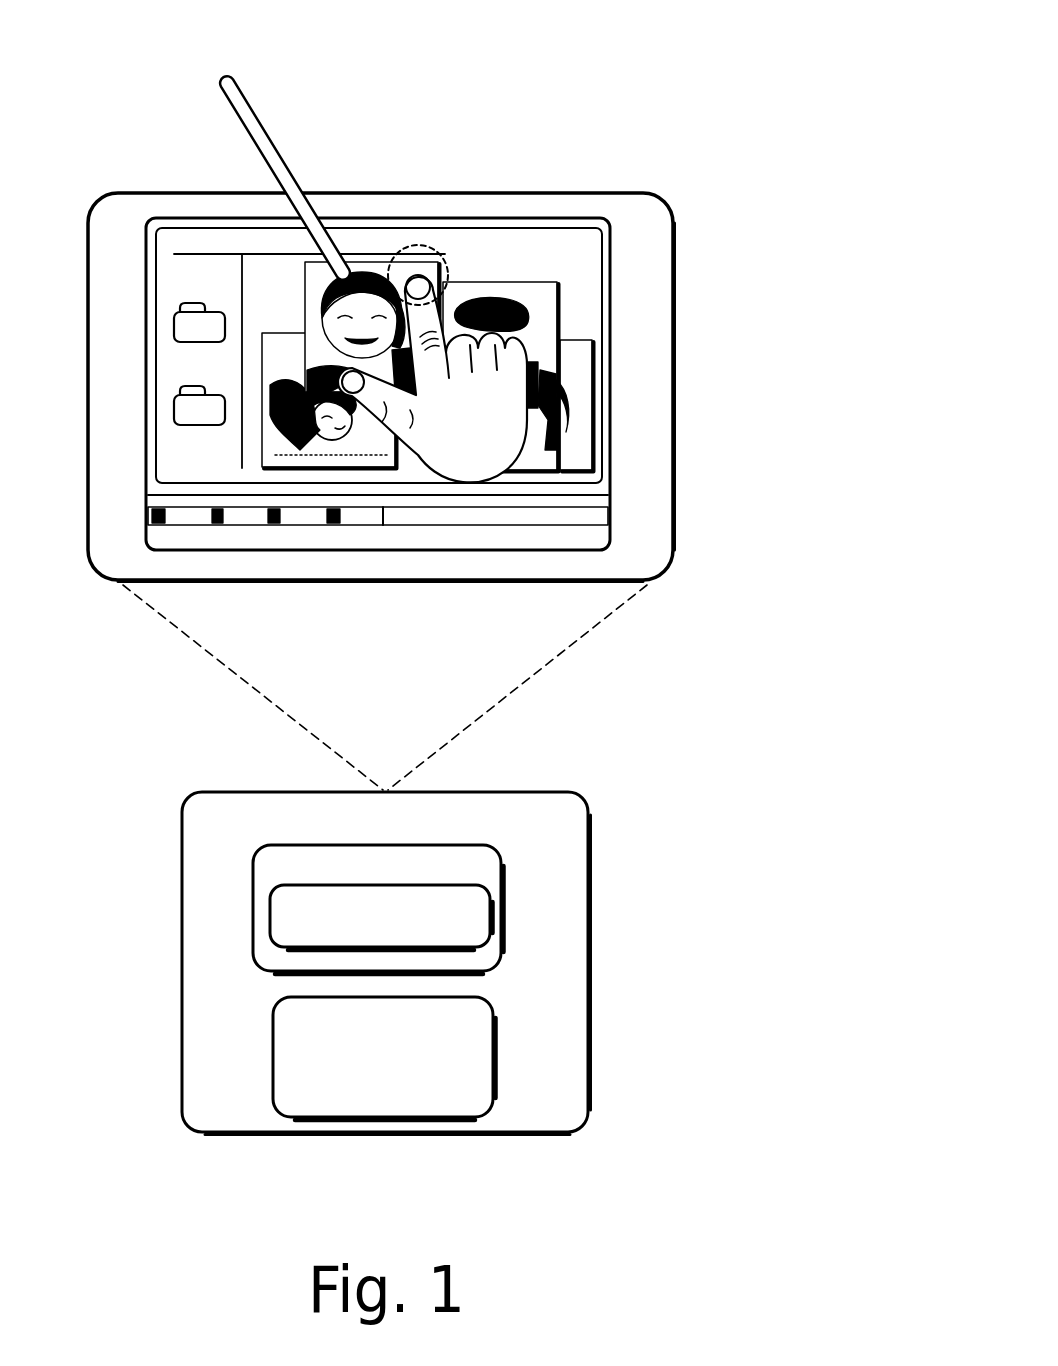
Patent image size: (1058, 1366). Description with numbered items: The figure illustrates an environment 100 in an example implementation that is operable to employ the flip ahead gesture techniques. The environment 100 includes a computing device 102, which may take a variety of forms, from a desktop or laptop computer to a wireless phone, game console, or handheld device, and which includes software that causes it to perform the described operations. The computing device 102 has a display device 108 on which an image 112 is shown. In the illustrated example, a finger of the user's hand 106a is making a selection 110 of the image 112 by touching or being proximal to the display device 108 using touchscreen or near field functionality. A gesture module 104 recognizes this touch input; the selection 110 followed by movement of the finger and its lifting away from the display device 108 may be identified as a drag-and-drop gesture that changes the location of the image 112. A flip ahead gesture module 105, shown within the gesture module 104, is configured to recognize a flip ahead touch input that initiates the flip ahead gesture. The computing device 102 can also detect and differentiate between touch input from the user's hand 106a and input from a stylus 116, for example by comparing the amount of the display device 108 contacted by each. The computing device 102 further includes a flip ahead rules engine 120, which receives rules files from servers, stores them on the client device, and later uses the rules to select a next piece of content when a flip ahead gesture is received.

The environment 100 is at (670, 62).
The computing device 102 is at (498, 824).
The gesture module 104 is at (478, 878).
The flip ahead gesture module 105 is at (397, 938).
The user's hand 106a is at (492, 464).
The display device 108 is at (585, 256).
The selection 110 is at (446, 262).
The image 112 is at (305, 312).
The stylus 116 is at (230, 78).
The flip ahead rules engine 120 is at (402, 1082).